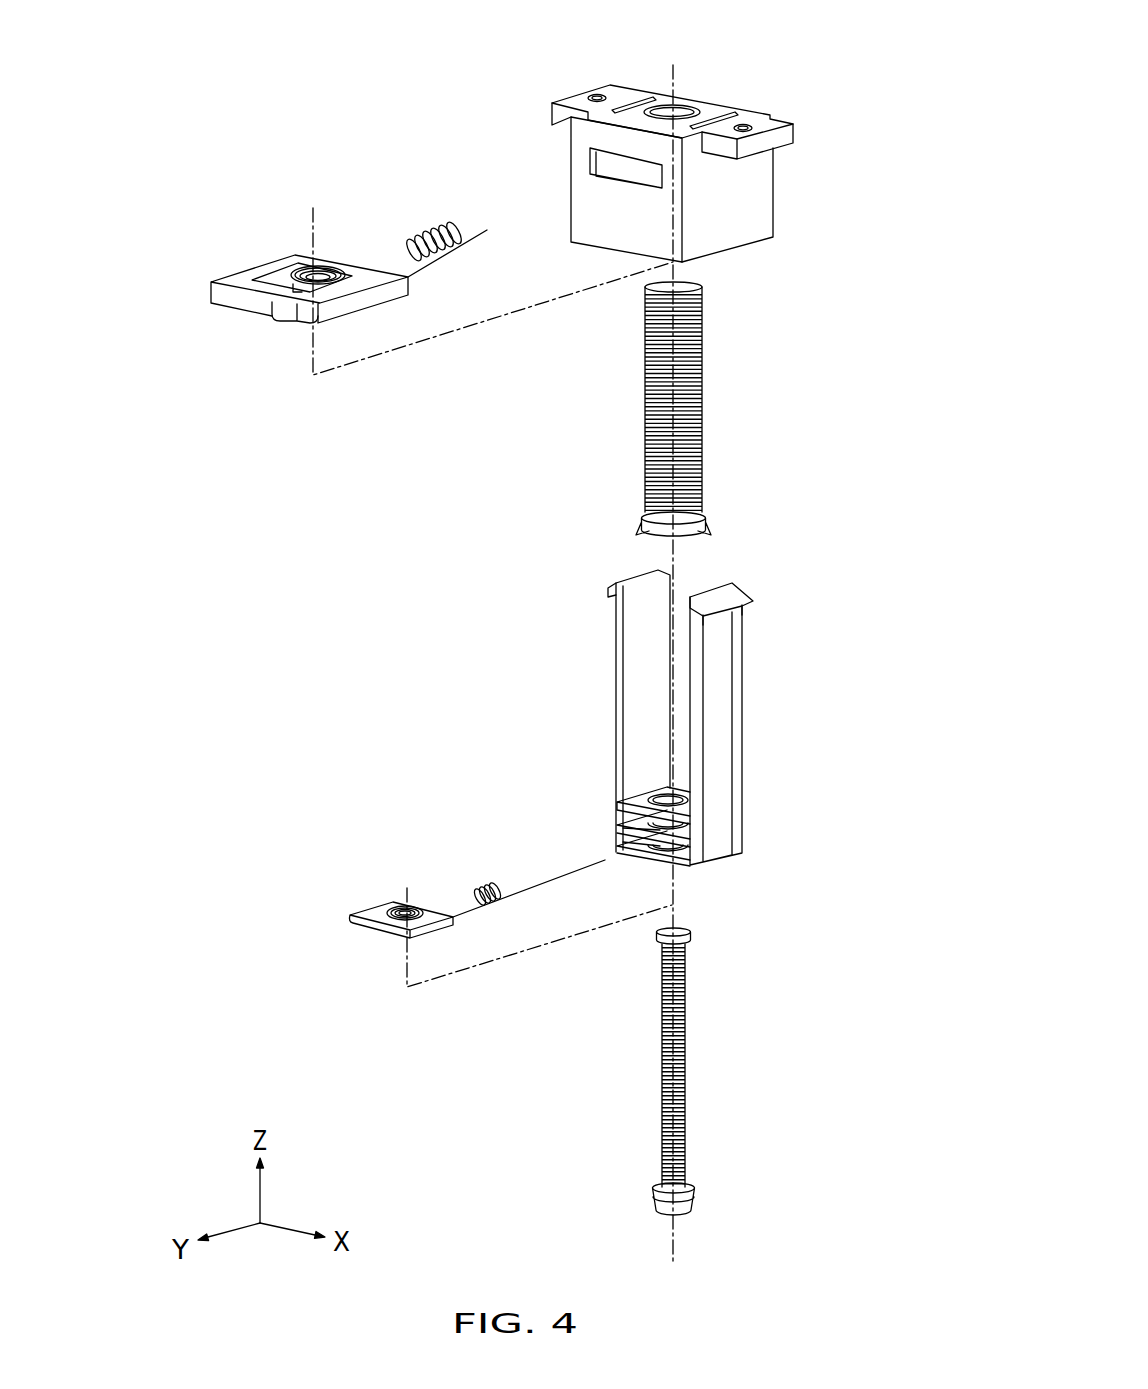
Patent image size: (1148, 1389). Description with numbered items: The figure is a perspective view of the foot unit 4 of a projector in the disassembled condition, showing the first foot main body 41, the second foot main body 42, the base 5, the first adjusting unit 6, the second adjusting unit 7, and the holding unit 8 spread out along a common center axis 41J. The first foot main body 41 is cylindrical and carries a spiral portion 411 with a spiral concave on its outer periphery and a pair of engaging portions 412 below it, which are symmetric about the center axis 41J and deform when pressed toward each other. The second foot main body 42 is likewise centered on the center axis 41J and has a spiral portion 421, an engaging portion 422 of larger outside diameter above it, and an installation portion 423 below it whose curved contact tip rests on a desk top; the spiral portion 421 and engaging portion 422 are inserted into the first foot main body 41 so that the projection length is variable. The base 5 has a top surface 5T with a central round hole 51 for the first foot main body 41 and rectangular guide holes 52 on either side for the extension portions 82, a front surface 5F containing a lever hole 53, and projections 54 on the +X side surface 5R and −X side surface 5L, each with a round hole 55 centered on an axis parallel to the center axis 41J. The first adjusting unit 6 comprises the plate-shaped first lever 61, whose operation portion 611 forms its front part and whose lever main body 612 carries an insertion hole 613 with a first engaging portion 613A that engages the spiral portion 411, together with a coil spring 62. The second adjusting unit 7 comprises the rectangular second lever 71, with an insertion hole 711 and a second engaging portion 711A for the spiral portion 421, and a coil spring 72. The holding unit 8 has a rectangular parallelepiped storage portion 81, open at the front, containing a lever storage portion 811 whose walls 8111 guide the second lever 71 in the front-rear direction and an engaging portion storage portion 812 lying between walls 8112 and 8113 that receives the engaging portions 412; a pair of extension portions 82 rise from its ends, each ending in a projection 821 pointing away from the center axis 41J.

The foot unit 4 is at (799, 57).
The base 5 is at (799, 184).
The top surface 5T is at (663, 95).
The −X side surface 5L is at (567, 183).
The front surface 5F is at (575, 225).
The +X side surface 5R is at (772, 214).
The round hole 51 is at (680, 110).
The guide holes 52 is at (628, 104).
The lever hole 53 is at (607, 185).
The projection 54 is at (557, 115).
The round hole 55 is at (597, 95).
The first adjusting unit 6 is at (216, 222).
The first lever 61 is at (408, 290).
The operation portion 611 is at (247, 304).
The lever main body 612 is at (345, 270).
The insertion hole 613 is at (282, 270).
The first engaging portion 613A is at (318, 268).
The coil spring 62 is at (438, 232).
The first foot main body 41 is at (731, 365).
The spiral portion 411 is at (700, 407).
The engaging portions 412 is at (645, 525).
The center axis 41J is at (677, 1245).
The second foot main body 42 is at (712, 1030).
The spiral portion 421 is at (688, 1103).
The engaging portion 422 is at (690, 934).
The installation portion 423 is at (690, 1200).
The second adjusting unit 7 is at (345, 880).
The second lever 71 is at (385, 926).
The insertion hole 711 is at (390, 912).
The second engaging portion 711A is at (415, 908).
The coil spring 72 is at (488, 886).
The holding unit 8 is at (774, 687).
The storage portion 81 is at (605, 804).
The lever storage portion 811 is at (627, 842).
The engaging portion storage portion 812 is at (632, 830).
The walls 8111 is at (685, 856).
The wall 8112 is at (690, 828).
The wall 8113 is at (680, 804).
The extension portions 82 is at (710, 668).
The projection 821 is at (742, 585).